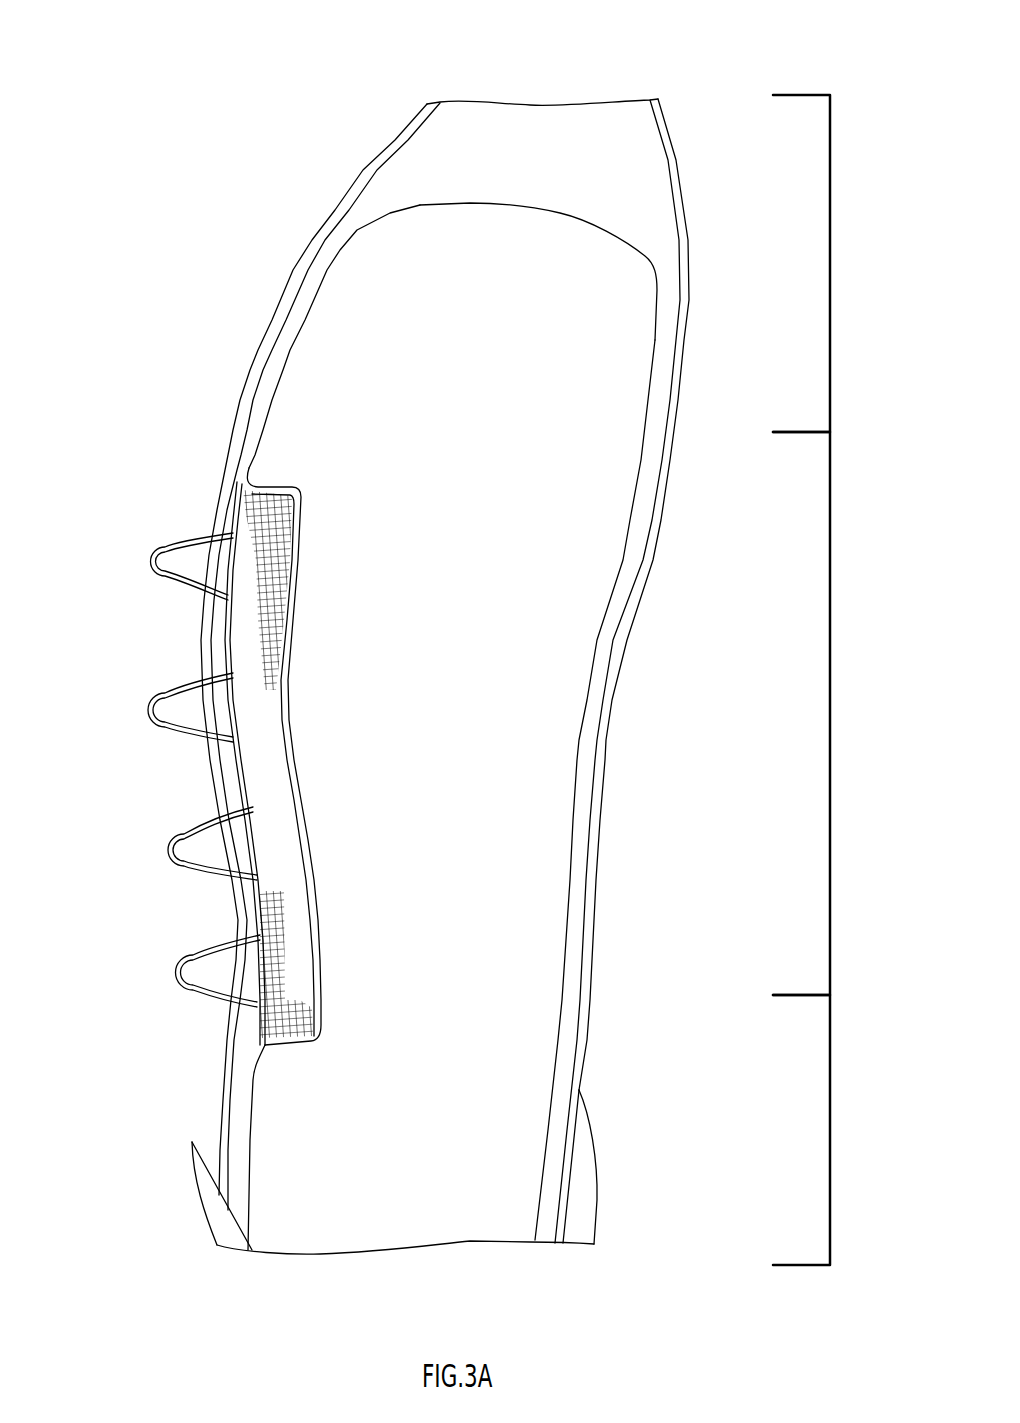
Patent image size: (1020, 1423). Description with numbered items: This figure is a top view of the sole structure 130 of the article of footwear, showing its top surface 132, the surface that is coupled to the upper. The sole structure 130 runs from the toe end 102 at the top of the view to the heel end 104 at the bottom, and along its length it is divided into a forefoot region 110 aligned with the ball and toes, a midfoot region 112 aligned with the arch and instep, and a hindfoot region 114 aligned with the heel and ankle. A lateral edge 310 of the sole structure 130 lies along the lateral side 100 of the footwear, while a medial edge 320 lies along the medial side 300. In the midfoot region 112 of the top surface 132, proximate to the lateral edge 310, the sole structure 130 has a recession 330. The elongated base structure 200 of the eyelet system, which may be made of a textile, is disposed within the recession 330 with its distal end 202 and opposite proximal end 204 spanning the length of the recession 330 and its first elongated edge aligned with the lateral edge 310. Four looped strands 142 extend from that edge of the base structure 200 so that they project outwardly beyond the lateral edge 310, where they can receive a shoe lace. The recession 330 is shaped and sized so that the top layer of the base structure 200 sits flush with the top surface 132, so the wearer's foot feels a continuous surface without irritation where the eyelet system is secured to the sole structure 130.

The lateral side 100 is at (166, 1099).
The toe end 102 is at (557, 75).
The heel end 104 is at (382, 1275).
The forefoot region 110 is at (832, 183).
The midfoot region 112 is at (832, 551).
The hindfoot region 114 is at (832, 1090).
The sole structure 130 is at (256, 176).
The top surface 132 is at (448, 733).
The looped strands 142 is at (143, 620).
The base structure 200 is at (272, 892).
The distal end 202 is at (258, 508).
The proximal end 204 is at (275, 1036).
The medial side 300 is at (657, 743).
The lateral edge 310 is at (238, 402).
The medial edge 320 is at (655, 540).
The recession 330 is at (278, 490).